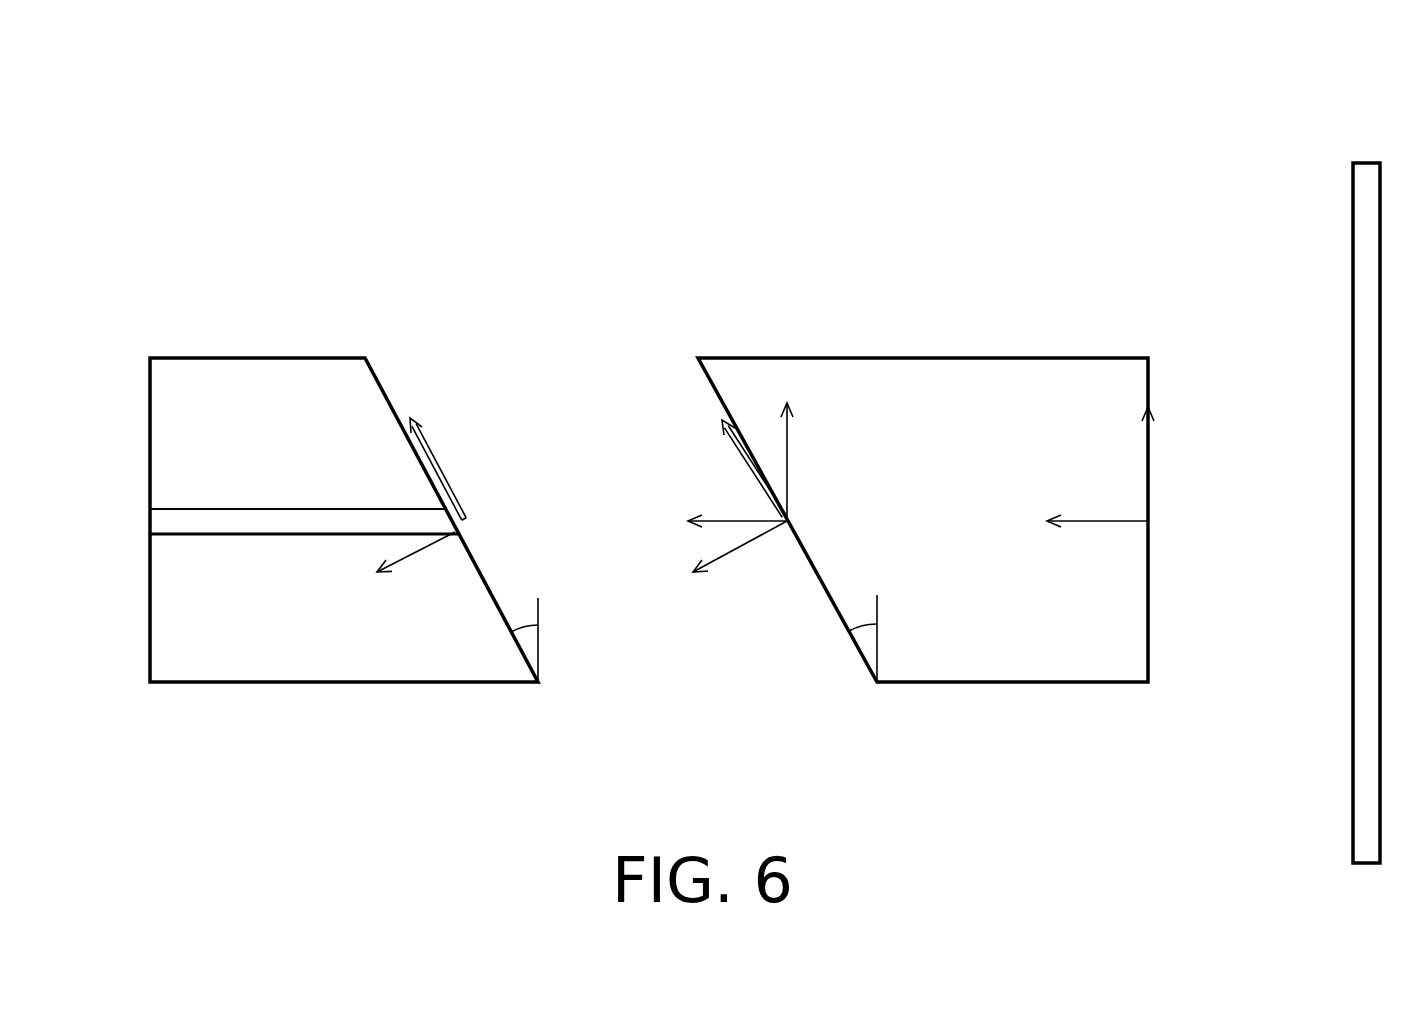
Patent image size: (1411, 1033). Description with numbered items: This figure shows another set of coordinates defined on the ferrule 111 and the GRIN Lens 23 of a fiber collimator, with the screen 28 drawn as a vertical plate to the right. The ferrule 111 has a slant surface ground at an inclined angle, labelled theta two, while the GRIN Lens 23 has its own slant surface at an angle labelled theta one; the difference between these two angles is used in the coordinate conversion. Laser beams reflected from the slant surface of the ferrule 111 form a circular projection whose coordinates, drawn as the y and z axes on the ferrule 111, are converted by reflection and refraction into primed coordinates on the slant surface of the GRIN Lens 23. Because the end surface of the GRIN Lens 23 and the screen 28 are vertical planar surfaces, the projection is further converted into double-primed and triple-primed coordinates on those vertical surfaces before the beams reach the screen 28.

The ferrule 111 is at (250, 358).
The GRIN Lens 23 is at (978, 358).
The screen 28 is at (1367, 163).